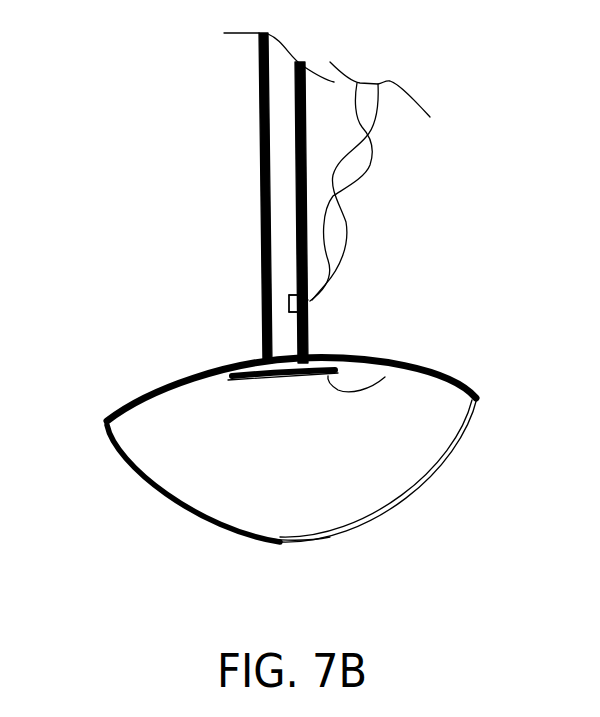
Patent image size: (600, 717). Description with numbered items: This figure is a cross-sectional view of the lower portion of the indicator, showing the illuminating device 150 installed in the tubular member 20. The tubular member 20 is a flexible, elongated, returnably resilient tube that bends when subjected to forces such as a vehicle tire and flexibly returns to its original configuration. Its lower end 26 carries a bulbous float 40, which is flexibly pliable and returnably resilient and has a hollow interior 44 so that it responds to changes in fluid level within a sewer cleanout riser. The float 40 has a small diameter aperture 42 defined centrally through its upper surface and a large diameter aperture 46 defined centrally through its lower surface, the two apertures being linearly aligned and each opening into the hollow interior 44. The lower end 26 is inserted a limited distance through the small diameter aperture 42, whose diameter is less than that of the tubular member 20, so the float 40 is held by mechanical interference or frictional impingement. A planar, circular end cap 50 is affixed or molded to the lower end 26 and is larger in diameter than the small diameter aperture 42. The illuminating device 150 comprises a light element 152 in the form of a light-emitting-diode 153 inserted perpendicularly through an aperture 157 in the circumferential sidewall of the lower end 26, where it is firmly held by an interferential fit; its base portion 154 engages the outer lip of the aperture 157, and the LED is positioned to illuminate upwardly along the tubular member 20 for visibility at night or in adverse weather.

The tubular member 20 is at (260, 168).
The lower end 26 is at (306, 325).
The bulbous float 40 is at (133, 405).
The small diameter aperture 42 is at (258, 348).
The hollow interior 44 is at (420, 422).
The large diameter aperture 46 is at (305, 538).
The end cap 50 is at (385, 377).
The illuminating device 150 is at (283, 289).
The light element 152 is at (298, 296).
The light-emitting-diode 153 is at (202, 252).
The base portion 154 is at (308, 300).
The aperture 157 is at (298, 308).